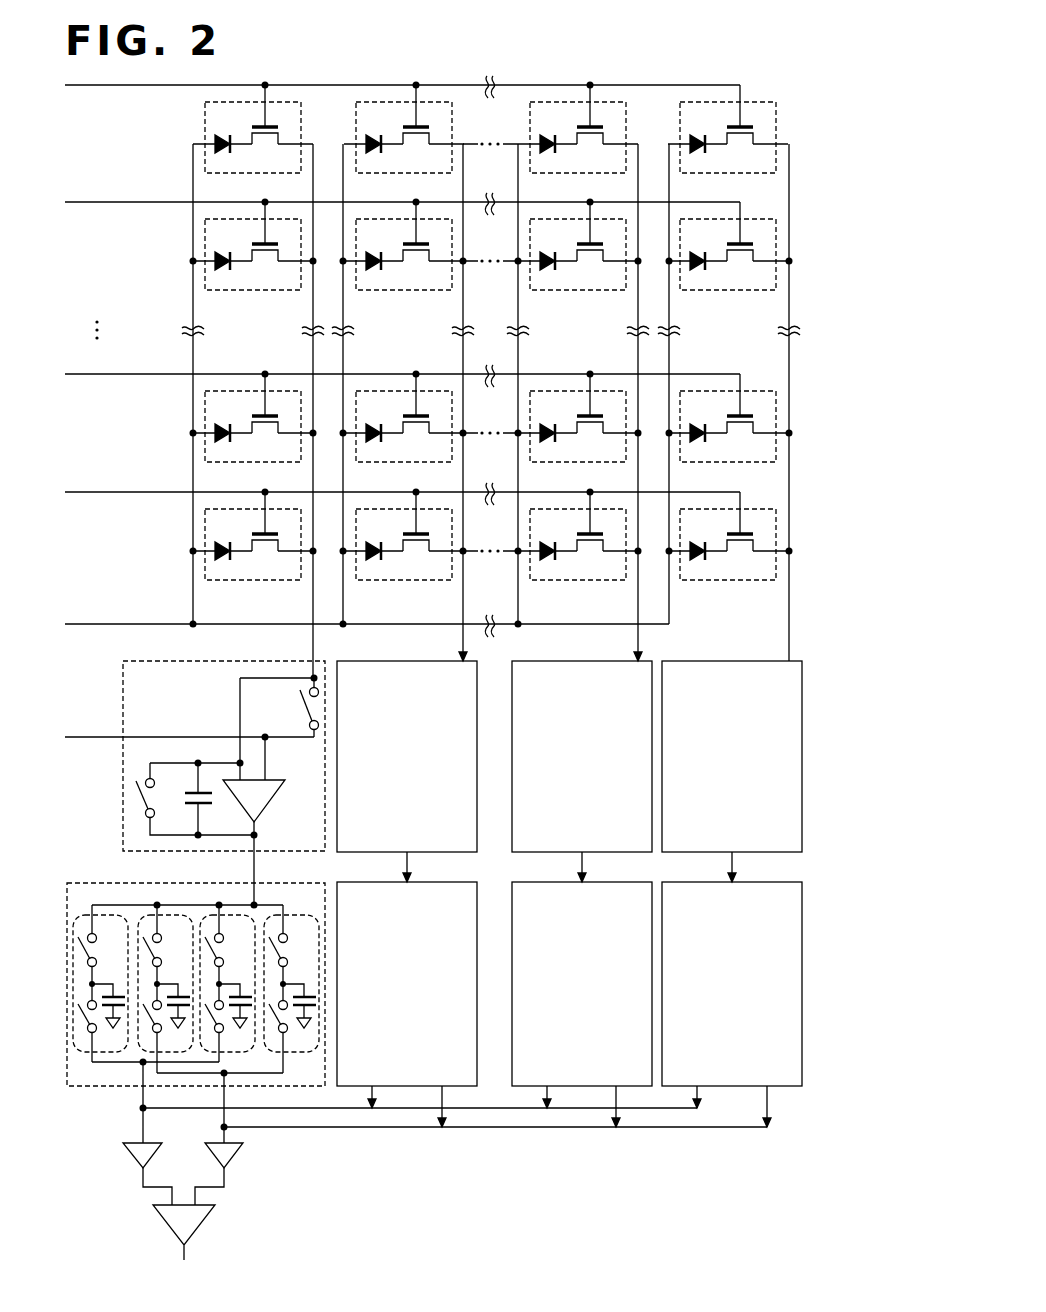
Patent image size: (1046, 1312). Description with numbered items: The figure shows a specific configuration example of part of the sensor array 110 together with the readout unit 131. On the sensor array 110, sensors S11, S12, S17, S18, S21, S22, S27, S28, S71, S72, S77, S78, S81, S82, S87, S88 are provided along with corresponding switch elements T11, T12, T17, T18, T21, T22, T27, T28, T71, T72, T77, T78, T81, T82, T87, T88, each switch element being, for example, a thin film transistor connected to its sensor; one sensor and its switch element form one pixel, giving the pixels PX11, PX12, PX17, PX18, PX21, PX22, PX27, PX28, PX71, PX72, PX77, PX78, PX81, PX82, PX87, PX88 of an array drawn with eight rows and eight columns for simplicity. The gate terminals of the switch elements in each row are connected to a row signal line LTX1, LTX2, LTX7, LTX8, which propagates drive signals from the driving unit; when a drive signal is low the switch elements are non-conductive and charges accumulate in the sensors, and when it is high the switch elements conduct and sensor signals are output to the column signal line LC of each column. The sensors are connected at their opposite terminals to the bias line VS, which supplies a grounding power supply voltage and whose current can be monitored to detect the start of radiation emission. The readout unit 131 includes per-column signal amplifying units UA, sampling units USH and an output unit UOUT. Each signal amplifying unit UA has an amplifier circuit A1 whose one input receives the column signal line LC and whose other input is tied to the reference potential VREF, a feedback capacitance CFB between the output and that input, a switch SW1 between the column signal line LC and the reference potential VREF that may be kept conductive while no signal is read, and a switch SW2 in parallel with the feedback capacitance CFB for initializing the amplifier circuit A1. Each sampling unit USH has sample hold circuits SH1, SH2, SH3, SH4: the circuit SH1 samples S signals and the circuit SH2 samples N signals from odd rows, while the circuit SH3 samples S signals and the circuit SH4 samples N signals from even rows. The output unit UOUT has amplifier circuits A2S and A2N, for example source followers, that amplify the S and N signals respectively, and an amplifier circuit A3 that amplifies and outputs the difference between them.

The sensor array 110 is at (467, 362).
The readout unit 131 is at (467, 960).
The pixel PX11 is at (253, 110).
The pixel PX12 is at (404, 110).
The pixel PX17 is at (578, 110).
The pixel PX18 is at (728, 110).
The pixel PX21 is at (253, 266).
The pixel PX22 is at (404, 266).
The pixel PX27 is at (578, 266).
The pixel PX28 is at (728, 266).
The pixel PX71 is at (253, 401).
The pixel PX72 is at (404, 401).
The pixel PX77 is at (578, 401).
The pixel PX78 is at (728, 401).
The pixel PX81 is at (253, 556).
The pixel PX82 is at (404, 556).
The pixel PX87 is at (578, 556).
The pixel PX88 is at (728, 556).
The sensor S11 is at (225, 131).
The sensor S12 is at (376, 131).
The sensor S17 is at (550, 131).
The sensor S18 is at (700, 131).
The sensor S21 is at (225, 248).
The sensor S22 is at (376, 248).
The sensor S27 is at (550, 248).
The sensor S28 is at (700, 248).
The sensor S71 is at (225, 420).
The sensor S72 is at (376, 420).
The sensor S77 is at (550, 420).
The sensor S78 is at (700, 420).
The sensor S81 is at (225, 538).
The sensor S82 is at (376, 538).
The sensor S87 is at (550, 538).
The sensor S88 is at (700, 538).
The switch element T11 is at (282, 69).
The switch element T12 is at (433, 69).
The switch element T17 is at (607, 69).
The switch element T18 is at (757, 69).
The switch element T21 is at (235, 306).
The switch element T22 is at (386, 306).
The switch element T27 is at (560, 306).
The switch element T28 is at (710, 306).
The switch element T71 is at (271, 363).
The switch element T72 is at (422, 363).
The switch element T77 is at (596, 363).
The switch element T78 is at (746, 363).
The switch element T81 is at (235, 596).
The switch element T82 is at (386, 596).
The switch element T87 is at (560, 596).
The switch element T88 is at (742, 534).
The signal line LTX1 is at (402, 98).
The signal line LTX2 is at (402, 215).
The signal line LTX7 is at (402, 389).
The signal line LTX8 is at (402, 507).
The bias line VS is at (367, 609).
The reference potential VREF is at (189, 724).
The column signal line LC is at (788, 644).
The signal amplifying unit UA is at (433, 783).
The switch SW1 is at (288, 709).
The switch SW2 is at (137, 805).
The feedback capacitance CFB is at (187, 799).
The amplifier circuit A1 is at (254, 801).
The sampling unit USH is at (434, 997).
The sample hold circuit SH1 is at (104, 912).
The sample hold circuit SH2 is at (169, 912).
The sample hold circuit SH3 is at (231, 912).
The sample hold circuit SH4 is at (295, 912).
The output unit UOUT is at (220, 1198).
The amplifier circuit A2S is at (133, 1152).
The amplifier circuit A2N is at (234, 1152).
The amplifier circuit A3 is at (200, 1220).